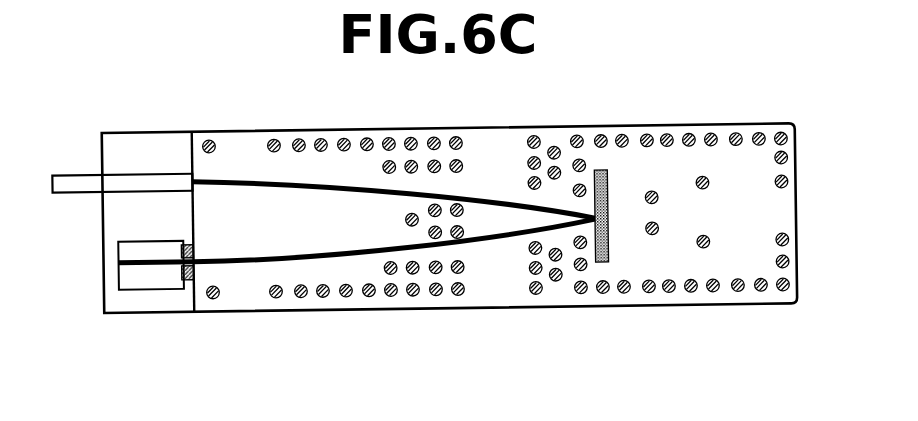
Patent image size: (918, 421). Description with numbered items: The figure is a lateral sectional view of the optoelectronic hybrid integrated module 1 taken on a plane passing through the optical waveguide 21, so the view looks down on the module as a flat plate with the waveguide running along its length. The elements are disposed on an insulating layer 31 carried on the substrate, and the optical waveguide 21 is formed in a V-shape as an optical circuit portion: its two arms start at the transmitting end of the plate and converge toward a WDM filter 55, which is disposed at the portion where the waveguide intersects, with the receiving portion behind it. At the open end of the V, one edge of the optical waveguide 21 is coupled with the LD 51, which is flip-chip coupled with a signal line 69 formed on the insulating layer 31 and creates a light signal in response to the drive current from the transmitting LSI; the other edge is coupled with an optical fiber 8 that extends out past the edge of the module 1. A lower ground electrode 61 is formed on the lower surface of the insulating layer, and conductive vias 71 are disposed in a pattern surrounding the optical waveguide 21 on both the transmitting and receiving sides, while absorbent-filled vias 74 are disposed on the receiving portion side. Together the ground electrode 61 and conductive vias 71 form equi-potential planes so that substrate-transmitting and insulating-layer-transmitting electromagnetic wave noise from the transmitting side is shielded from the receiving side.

The optoelectronic hybrid integrated module 1 is at (498, 352).
The optical fiber 8 is at (73, 175).
The optical waveguide 21 is at (249, 186).
The insulating layer 31 is at (145, 300).
The LD 51 is at (128, 280).
The WDM filter 55 is at (606, 190).
The lower ground electrode 61 is at (184, 246).
The signal line 69 is at (185, 290).
The conductive vias 71 is at (303, 299).
The absorbent-filled vias 74 is at (706, 240).